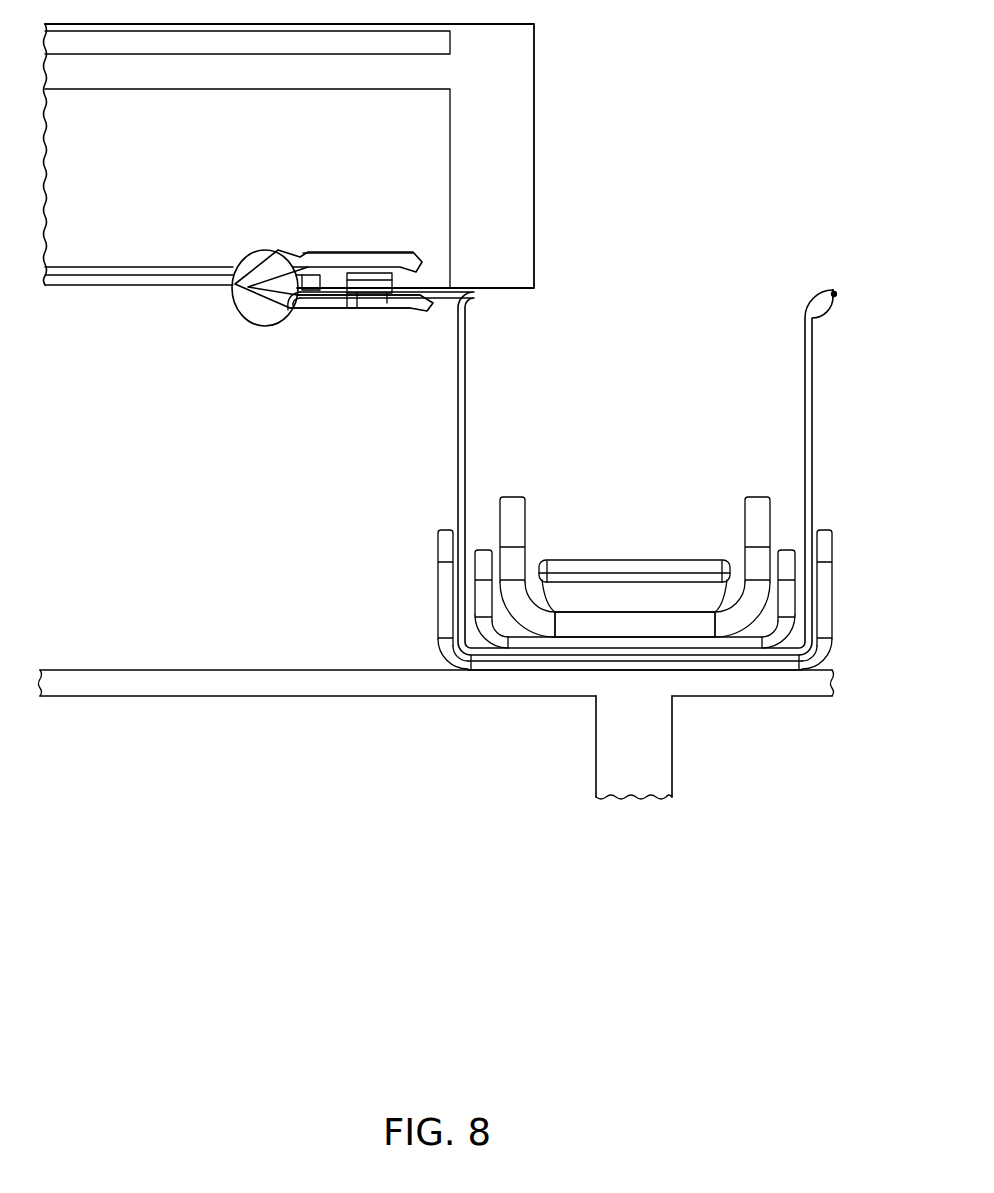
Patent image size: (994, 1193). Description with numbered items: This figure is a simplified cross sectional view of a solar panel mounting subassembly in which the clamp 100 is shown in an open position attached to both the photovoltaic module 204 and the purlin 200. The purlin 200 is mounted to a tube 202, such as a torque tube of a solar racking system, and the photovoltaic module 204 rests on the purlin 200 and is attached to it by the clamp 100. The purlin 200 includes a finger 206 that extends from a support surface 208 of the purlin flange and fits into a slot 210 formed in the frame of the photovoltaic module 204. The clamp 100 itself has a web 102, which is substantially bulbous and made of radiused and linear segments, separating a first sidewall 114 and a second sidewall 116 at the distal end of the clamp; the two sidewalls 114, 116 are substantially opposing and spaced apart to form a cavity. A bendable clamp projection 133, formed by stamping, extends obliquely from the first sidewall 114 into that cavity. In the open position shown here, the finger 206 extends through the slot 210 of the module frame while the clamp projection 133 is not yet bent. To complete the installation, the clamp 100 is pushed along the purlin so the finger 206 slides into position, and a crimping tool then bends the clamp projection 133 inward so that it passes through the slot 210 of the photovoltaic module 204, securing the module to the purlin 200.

The photovoltaic module clamp 100 is at (341, 312).
The web 102 is at (243, 256).
The first sidewall 114 is at (325, 303).
The second sidewall 116 is at (367, 258).
The clamp projection 133 is at (367, 305).
The purlin 200 is at (537, 480).
The tube 202 is at (218, 684).
The photovoltaic module 204 is at (520, 232).
The finger 206 is at (387, 302).
The support surface 208 is at (292, 312).
The slot 210 is at (403, 280).